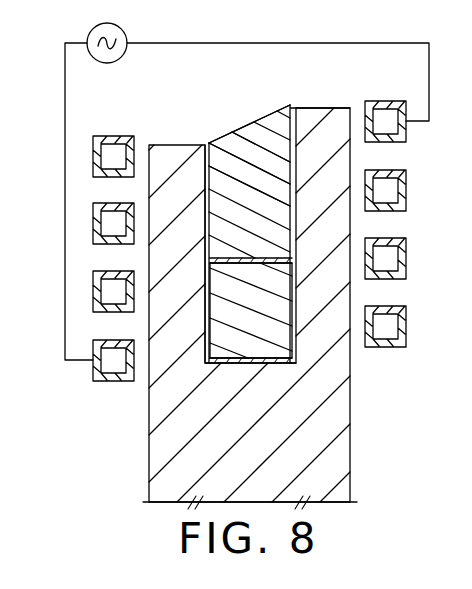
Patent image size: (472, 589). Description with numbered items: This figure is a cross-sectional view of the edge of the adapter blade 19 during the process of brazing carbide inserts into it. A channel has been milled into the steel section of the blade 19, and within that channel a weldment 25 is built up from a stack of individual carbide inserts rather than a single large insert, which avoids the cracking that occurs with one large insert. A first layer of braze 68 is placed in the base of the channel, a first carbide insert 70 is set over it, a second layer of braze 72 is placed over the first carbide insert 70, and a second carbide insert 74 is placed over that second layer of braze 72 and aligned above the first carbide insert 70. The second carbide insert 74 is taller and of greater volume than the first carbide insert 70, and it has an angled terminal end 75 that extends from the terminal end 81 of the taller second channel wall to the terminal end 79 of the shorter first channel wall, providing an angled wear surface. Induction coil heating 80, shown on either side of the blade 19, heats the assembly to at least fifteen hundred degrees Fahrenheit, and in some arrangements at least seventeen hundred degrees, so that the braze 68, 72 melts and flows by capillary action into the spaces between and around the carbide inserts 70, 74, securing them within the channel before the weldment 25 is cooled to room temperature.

The adapter blade 19 is at (355, 438).
The weldment 25 is at (256, 112).
The first layer of braze 68 is at (243, 363).
The first carbide insert 70 is at (277, 323).
The second layer of braze 72 is at (206, 166).
The second carbide insert 74 is at (277, 180).
The angled terminal end 75 is at (240, 126).
The terminal end of the first wall 79 is at (162, 145).
The induction coil heating 80 is at (78, 124).
The terminal end of the second wall 81 is at (308, 108).